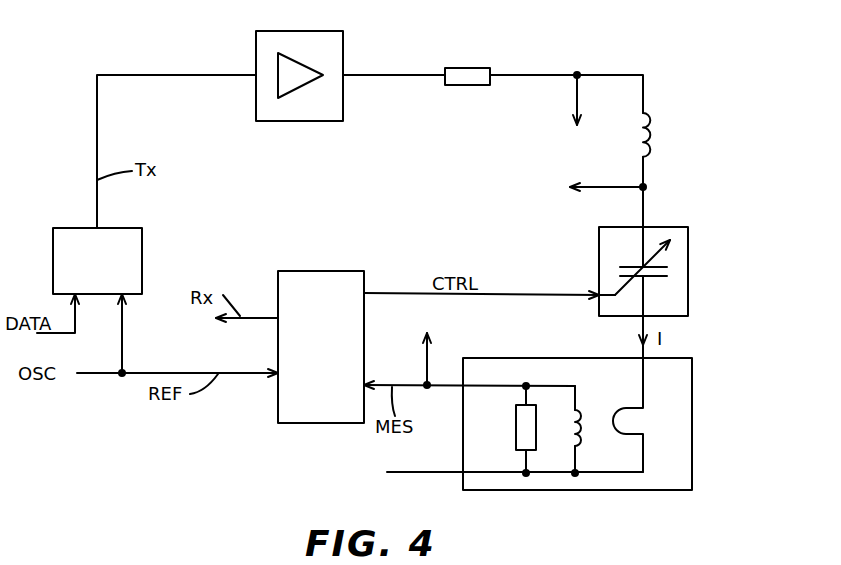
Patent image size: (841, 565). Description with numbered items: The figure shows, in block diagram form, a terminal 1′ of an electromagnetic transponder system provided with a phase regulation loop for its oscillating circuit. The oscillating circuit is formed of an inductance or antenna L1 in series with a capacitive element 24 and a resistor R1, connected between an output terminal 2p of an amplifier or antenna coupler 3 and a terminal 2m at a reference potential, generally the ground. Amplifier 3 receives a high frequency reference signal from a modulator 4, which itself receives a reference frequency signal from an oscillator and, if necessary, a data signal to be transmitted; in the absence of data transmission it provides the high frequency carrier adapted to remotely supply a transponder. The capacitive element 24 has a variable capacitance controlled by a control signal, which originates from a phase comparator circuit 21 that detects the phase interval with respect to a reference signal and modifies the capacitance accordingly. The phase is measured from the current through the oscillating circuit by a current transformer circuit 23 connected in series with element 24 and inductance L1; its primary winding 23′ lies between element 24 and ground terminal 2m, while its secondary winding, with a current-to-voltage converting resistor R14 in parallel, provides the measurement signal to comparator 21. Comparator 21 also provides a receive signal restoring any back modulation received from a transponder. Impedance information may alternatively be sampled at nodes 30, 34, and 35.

The terminal 1′ is at (180, 425).
The output terminal 2p is at (416, 74).
The terminal at reference potential 2m is at (430, 474).
The amplifier 3 is at (262, 31).
The modulator 4 is at (142, 229).
The phase comparator circuit 21 is at (347, 271).
The current transformer circuit 23 is at (597, 406).
The primary winding 23′ is at (636, 433).
The capacitive element 24 is at (685, 224).
The node 30 is at (576, 102).
The node 34 is at (612, 187).
The node 35 is at (434, 334).
The resistor R1 is at (467, 64).
The inductance L1 is at (660, 135).
The current-to-voltage converting resistor R14 is at (504, 429).